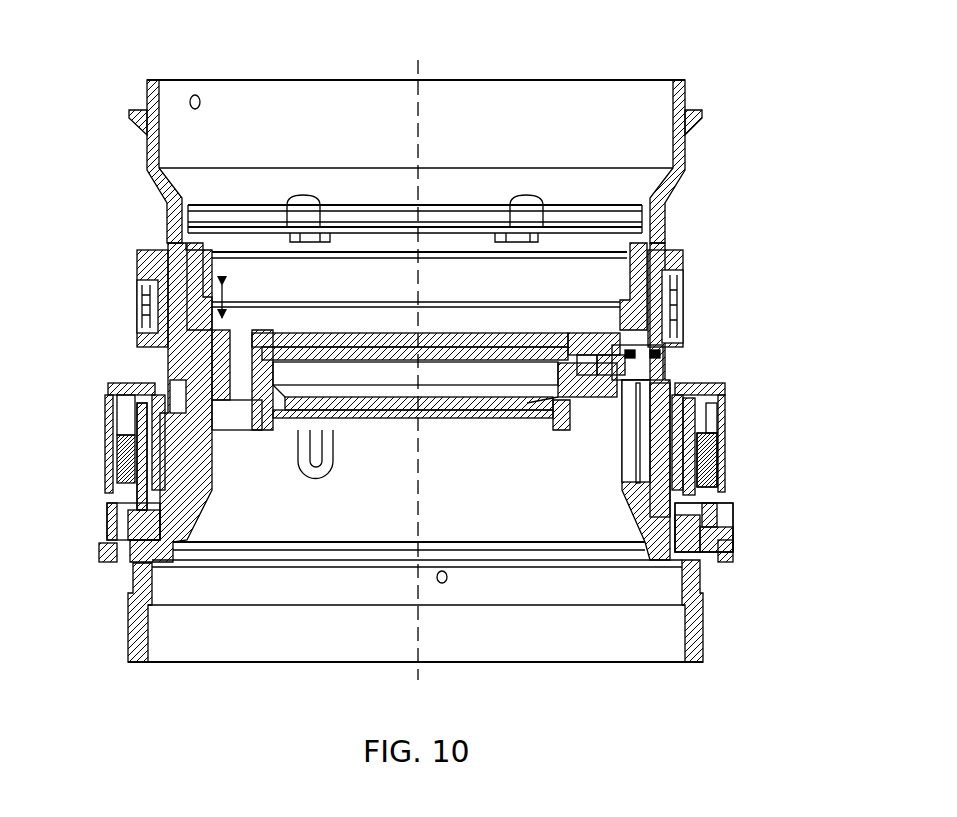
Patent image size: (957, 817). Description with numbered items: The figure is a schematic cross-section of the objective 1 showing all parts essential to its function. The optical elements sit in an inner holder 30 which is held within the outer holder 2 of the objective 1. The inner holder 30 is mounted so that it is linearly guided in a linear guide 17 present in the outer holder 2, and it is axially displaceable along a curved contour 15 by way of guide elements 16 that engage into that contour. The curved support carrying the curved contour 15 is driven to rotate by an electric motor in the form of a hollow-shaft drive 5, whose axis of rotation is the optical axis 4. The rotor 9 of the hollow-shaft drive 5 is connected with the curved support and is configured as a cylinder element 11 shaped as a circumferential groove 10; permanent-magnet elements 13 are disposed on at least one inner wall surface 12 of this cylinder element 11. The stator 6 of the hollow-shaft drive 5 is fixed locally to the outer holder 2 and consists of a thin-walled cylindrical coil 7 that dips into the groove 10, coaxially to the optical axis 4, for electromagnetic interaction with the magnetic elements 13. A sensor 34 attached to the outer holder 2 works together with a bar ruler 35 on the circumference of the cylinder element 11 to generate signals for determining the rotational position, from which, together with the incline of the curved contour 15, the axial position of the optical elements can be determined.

The objective 1 is at (500, 60).
The outer holder 2 is at (682, 155).
The optical axis 4 is at (418, 115).
The hollow-shaft drive 5 is at (737, 375).
The stator 6 is at (717, 495).
The thin-walled cylindrical coil 7 is at (704, 527).
The rotor 9 is at (717, 440).
The circumferential groove 10 is at (723, 400).
The cylinder element 11 is at (707, 460).
The inner wall surface 12 is at (710, 415).
The permanent-magnet elements 13 is at (716, 490).
The curved contour 15 is at (650, 423).
The guide elements 16 is at (657, 370).
The linear guide 17 is at (313, 455).
The inner holder 30 is at (557, 430).
The sensor 34 is at (137, 300).
The bar ruler 35 is at (683, 292).